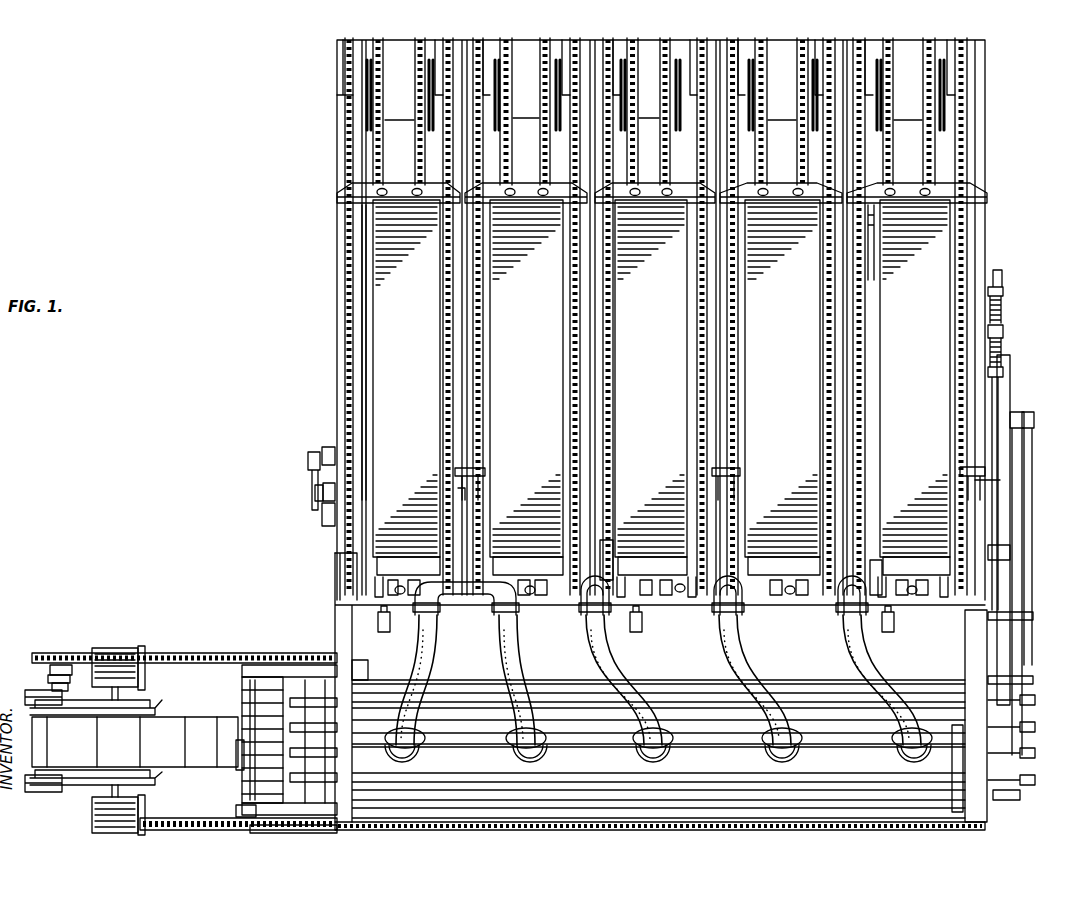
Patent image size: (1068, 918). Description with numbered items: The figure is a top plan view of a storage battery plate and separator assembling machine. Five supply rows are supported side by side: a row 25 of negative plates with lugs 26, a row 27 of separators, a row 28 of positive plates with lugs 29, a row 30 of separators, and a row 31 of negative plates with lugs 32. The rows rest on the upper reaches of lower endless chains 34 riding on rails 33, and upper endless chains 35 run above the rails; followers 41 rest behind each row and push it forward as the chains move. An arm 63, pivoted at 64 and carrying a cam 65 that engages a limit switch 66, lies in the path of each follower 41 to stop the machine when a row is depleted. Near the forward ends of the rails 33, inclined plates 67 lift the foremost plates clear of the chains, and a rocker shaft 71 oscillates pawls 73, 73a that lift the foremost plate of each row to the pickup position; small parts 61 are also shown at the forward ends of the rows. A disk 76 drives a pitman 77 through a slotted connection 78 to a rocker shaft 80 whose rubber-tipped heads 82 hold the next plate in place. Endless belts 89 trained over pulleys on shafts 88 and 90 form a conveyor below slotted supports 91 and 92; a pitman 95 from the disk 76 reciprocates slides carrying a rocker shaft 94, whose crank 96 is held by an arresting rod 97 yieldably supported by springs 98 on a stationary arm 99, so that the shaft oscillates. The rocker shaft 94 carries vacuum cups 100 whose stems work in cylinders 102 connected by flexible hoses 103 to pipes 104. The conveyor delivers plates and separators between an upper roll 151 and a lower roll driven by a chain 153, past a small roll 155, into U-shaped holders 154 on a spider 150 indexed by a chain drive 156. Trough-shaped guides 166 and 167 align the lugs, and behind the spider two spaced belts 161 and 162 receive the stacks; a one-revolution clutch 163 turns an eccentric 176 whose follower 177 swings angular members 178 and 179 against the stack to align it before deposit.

The row of negative battery plates 25 is at (398, 379).
The row of separators 27 is at (526, 379).
The row of positive plates 28 is at (655, 379).
The row of separators 30 is at (781, 379).
The row of negative plates 31 is at (917, 379).
The lugs 26 is at (350, 583).
The lugs 29 is at (610, 553).
The lugs 32 is at (882, 578).
The rails 33 is at (412, 172).
The lower endless chains 34 is at (418, 148).
The upper endless chains 35 is at (480, 318).
The followers 41 is at (403, 195).
The roller 61 is at (402, 588).
The arm 63 is at (470, 472).
The pivot 64 is at (325, 492).
The cam 65 is at (316, 490).
The limit switch 66 is at (310, 458).
The upwardly inclined plates 67 is at (410, 600).
The rocker shaft 71 is at (330, 513).
The spring-actuated pawls 73 is at (378, 588).
The stop 73a is at (880, 600).
The disk 76 is at (1010, 392).
The pitman 77 is at (1024, 528).
The slotted connection 78 is at (1033, 637).
The rocker shaft 80 is at (1033, 615).
The rubber tipped heads 82 is at (377, 617).
The shaft 88 is at (1020, 797).
The endless belts 89 is at (1036, 727).
The shaft 90 is at (315, 698).
The slotted support 91 is at (987, 805).
The slotted support 92 is at (346, 650).
The rocker shaft 94 is at (820, 740).
The pitman 95 is at (1033, 680).
The crank 96 is at (965, 718).
The arresting rod 97 is at (1011, 558).
The springs 98 is at (1003, 298).
The stationary arm 99 is at (1003, 330).
The vacuum cups 100 is at (520, 760).
The cylinder 102 is at (402, 730).
The flexible hose 103 is at (508, 668).
The pipes 104 is at (465, 600).
The spider 150 is at (170, 710).
The upper roll 151 is at (265, 695).
The chain 153 is at (245, 812).
The U-shaped receivers or holders 154 is at (200, 725).
The small roll 155 is at (240, 755).
The chain drive 156 is at (445, 823).
The endless belt 161 is at (48, 695).
The endless belt 162 is at (42, 793).
The one-revolution clutch 163 is at (62, 667).
The trough-shaped guide 166 is at (133, 705).
The trough-shaped guide 167 is at (135, 775).
The eccentric 176 is at (70, 680).
The follower 177 is at (66, 688).
The angular member 178 is at (118, 655).
The angular member 179 is at (110, 817).